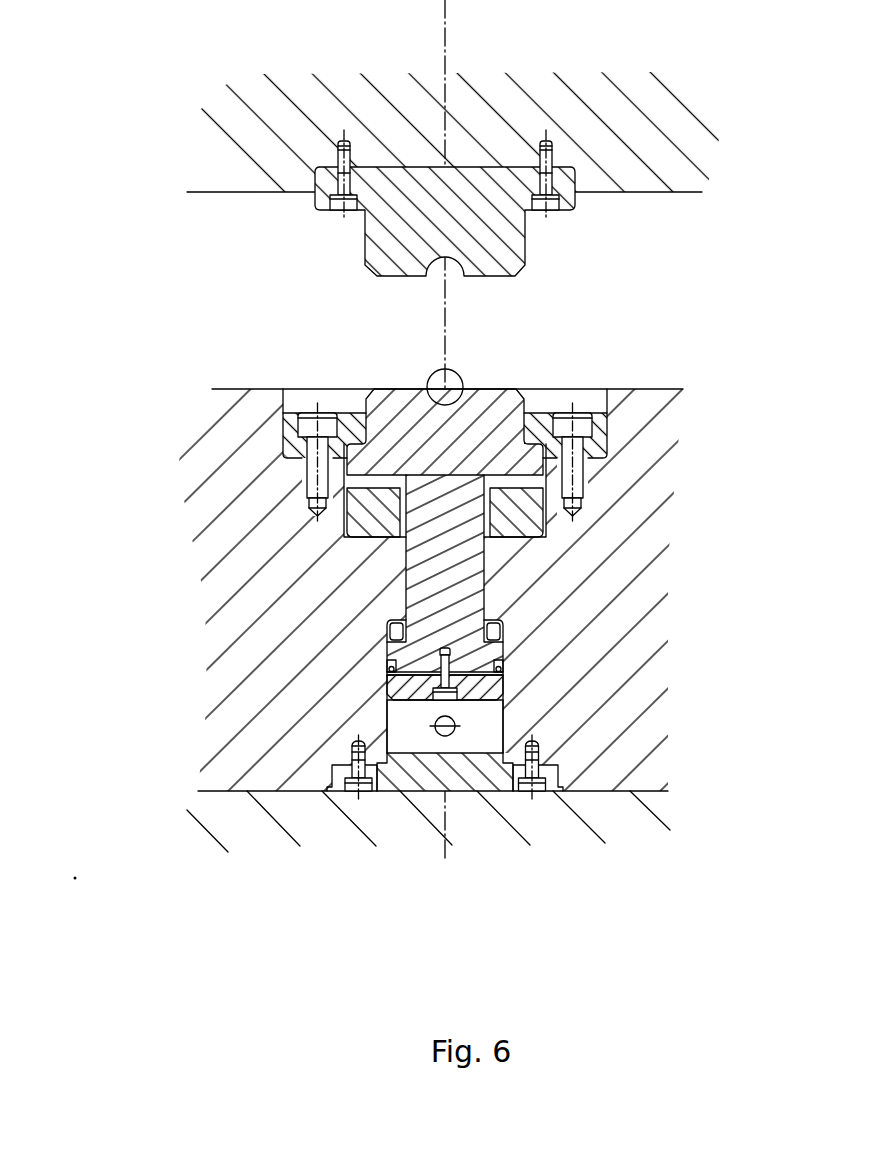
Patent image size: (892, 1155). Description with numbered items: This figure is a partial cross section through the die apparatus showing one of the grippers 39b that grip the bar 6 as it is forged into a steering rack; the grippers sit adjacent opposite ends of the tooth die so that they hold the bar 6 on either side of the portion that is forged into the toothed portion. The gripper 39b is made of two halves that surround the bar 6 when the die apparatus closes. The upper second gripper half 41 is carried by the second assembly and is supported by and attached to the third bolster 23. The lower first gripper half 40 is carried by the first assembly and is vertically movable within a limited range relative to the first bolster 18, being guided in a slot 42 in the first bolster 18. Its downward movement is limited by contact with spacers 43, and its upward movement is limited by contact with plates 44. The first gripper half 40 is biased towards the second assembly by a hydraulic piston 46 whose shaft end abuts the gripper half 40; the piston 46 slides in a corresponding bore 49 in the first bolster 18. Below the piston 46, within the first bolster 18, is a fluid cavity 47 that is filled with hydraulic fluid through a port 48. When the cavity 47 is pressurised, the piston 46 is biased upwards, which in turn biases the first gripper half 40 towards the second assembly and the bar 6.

The bar 6 is at (454, 375).
The first bolster 18 is at (242, 620).
The third bolster 23 is at (205, 142).
The gripper 39b is at (617, 298).
The first gripper half 40 is at (498, 397).
The second gripper half 41 is at (490, 252).
The slot 42 is at (345, 488).
The spacer 43 is at (533, 518).
The plate 44 is at (598, 443).
The hydraulic piston 46 is at (473, 557).
The fluid cavity 47 is at (470, 740).
The port 48 is at (438, 733).
The bore 49 is at (507, 723).